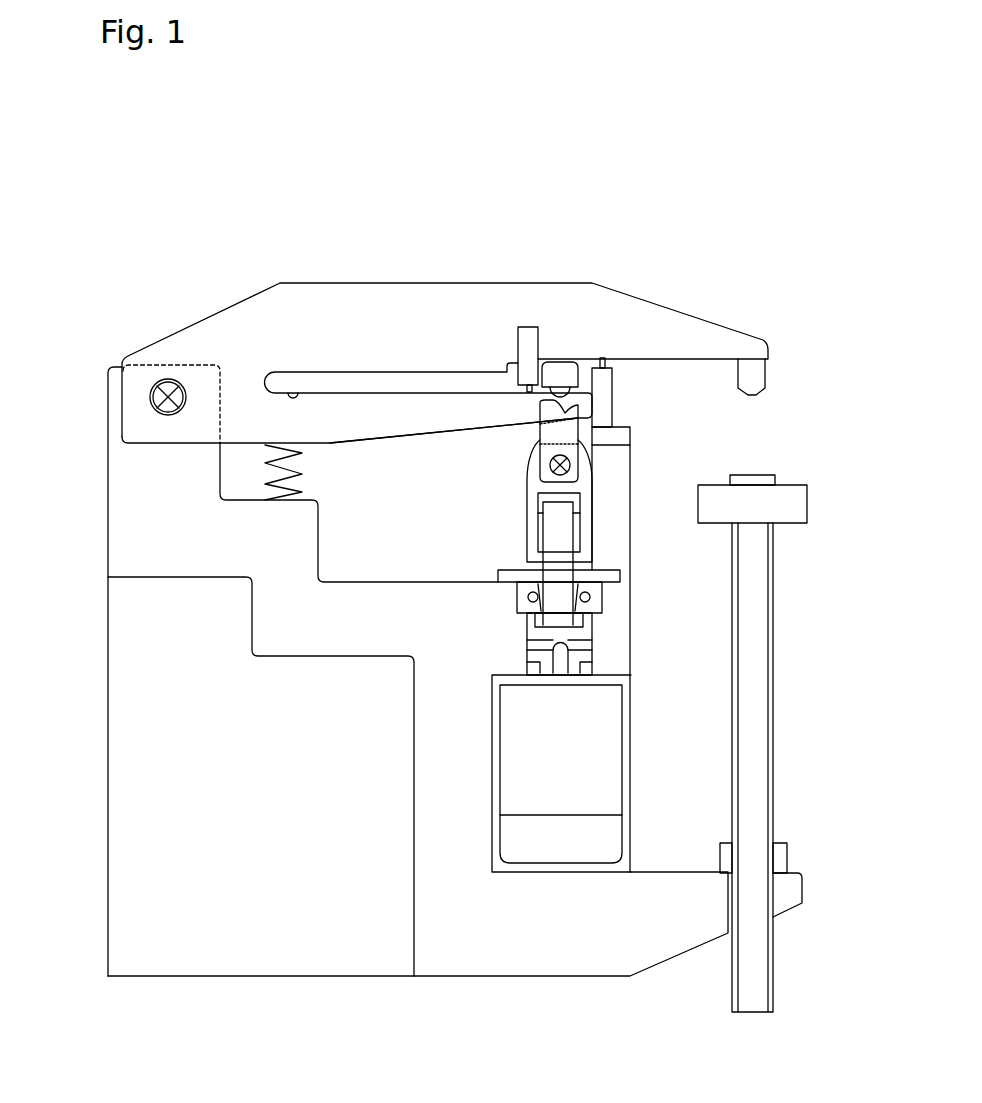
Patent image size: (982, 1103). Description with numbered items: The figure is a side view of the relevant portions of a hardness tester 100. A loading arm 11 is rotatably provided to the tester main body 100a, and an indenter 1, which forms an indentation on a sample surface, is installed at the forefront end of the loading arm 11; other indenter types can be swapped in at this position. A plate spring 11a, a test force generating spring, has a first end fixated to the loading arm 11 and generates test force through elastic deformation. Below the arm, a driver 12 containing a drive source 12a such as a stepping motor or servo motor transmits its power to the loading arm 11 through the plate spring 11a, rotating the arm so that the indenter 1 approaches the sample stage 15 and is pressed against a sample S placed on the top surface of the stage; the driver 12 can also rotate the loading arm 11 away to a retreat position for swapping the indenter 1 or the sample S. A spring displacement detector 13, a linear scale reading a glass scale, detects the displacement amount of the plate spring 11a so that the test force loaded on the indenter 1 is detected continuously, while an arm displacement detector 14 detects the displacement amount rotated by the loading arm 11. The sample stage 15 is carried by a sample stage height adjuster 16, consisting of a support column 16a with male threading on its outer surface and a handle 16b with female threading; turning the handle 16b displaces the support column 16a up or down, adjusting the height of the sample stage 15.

The hardness tester 100 is at (448, 202).
The tester main body 100a is at (135, 487).
The indenter 1 is at (766, 392).
The loading arm 11 is at (615, 313).
The plate spring 11a is at (393, 427).
The driver 12 is at (560, 557).
The drive source 12a is at (598, 763).
The spring displacement detector 13 is at (528, 335).
The arm displacement detector 14 is at (603, 393).
The sample stage 15 is at (810, 502).
The sample stage height adjuster 16 is at (868, 765).
The support column 16a is at (780, 793).
The handle 16b is at (787, 858).
The sample S is at (771, 480).